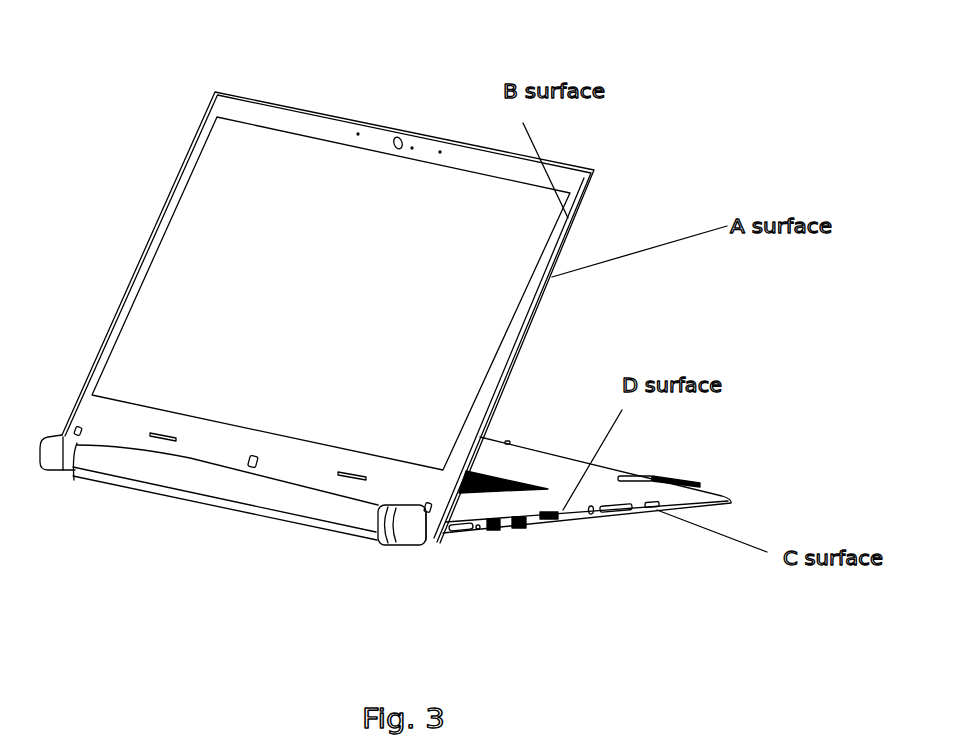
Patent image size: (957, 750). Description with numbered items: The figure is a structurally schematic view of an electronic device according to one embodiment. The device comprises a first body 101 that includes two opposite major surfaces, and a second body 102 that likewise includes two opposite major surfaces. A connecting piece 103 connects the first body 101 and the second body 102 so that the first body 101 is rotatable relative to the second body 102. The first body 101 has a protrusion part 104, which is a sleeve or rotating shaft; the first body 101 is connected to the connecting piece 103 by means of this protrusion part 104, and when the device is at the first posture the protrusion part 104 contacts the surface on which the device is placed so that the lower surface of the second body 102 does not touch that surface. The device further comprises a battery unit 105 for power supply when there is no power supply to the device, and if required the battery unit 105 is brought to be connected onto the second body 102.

The first body 101 is at (503, 384).
The second body 102 is at (580, 515).
The connecting piece 103 is at (375, 530).
The protrusion part 104 is at (425, 542).
The battery unit 105 is at (222, 482).